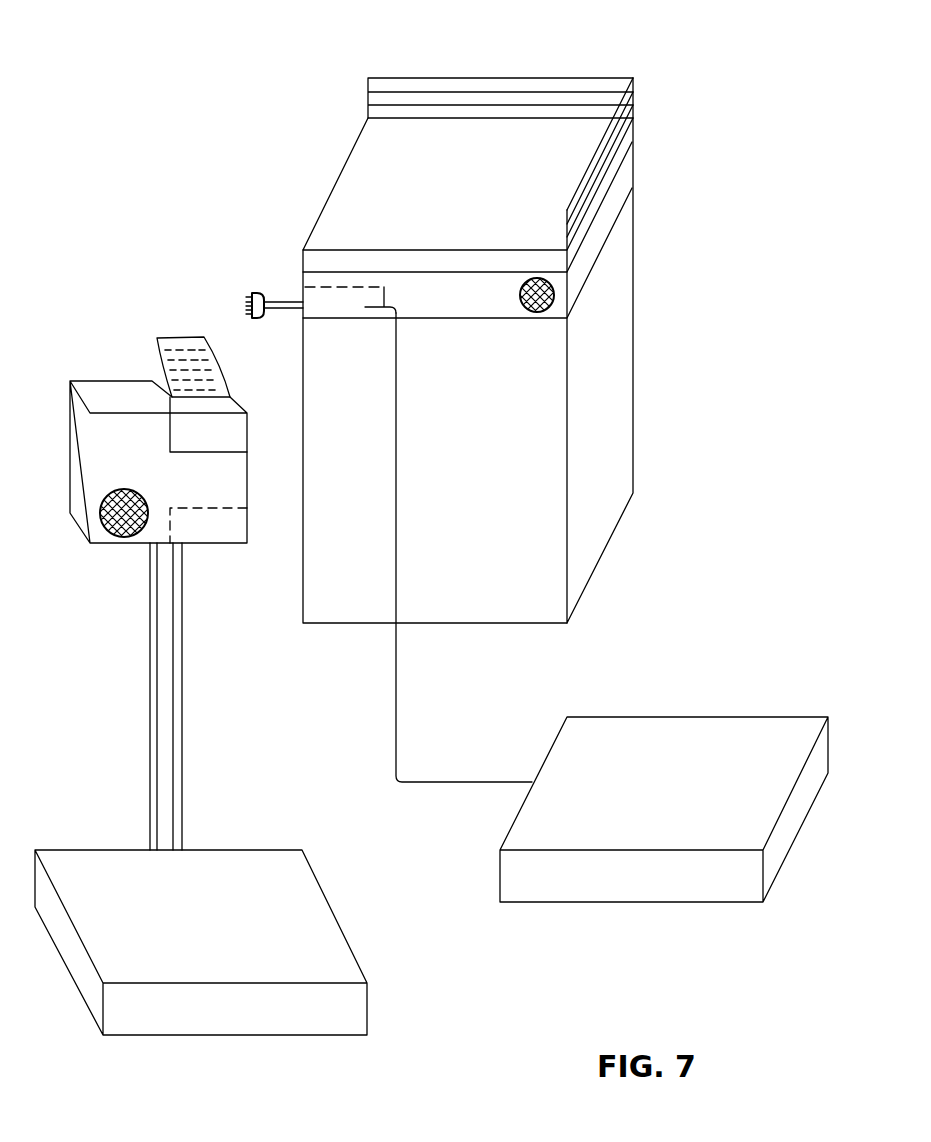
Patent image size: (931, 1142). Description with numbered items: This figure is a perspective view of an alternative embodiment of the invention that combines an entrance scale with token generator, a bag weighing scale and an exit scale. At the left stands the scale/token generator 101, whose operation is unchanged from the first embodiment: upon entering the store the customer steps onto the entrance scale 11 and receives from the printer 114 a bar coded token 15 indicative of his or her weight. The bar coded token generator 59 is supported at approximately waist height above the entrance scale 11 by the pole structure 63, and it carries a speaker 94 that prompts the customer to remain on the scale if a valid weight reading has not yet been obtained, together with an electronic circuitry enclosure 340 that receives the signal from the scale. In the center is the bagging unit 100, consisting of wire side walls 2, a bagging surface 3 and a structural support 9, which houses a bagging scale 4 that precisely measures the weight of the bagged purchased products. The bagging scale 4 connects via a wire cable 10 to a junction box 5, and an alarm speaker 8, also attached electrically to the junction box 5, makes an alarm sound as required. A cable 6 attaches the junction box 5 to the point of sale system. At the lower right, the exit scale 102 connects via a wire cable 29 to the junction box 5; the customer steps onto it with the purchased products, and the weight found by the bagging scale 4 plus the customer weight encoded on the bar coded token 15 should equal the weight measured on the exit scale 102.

The wire side walls 2 is at (472, 78).
The bagging surface 3 is at (352, 187).
The bagging scale 4 is at (333, 263).
The junction box 5 is at (323, 302).
The cable 6 is at (254, 294).
The alarm speaker 8 is at (548, 313).
The structural support 9 is at (613, 312).
The wire cable 10 is at (384, 287).
The bagging unit 100 is at (660, 331).
The scale/token generator 101 is at (91, 346).
The bar coded token 15 is at (185, 337).
The bar coded token generator 59 is at (80, 435).
The printer 114 is at (227, 427).
The electronic circuitry enclosure 340 is at (223, 530).
The speaker 94 is at (132, 544).
The pole structure 63 is at (183, 658).
The entrance scale 11 is at (275, 849).
The wire cable 29 is at (397, 680).
The exit scale 102 is at (703, 716).